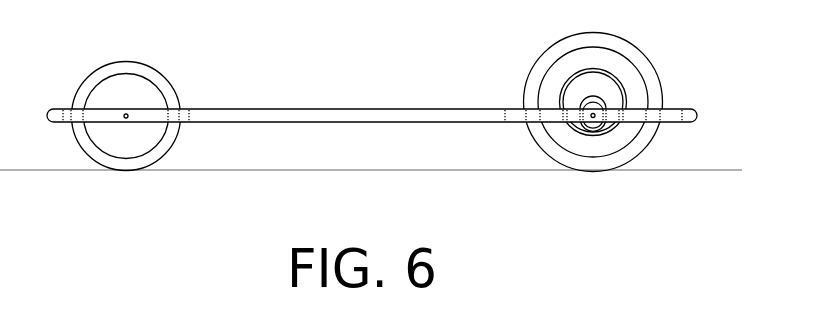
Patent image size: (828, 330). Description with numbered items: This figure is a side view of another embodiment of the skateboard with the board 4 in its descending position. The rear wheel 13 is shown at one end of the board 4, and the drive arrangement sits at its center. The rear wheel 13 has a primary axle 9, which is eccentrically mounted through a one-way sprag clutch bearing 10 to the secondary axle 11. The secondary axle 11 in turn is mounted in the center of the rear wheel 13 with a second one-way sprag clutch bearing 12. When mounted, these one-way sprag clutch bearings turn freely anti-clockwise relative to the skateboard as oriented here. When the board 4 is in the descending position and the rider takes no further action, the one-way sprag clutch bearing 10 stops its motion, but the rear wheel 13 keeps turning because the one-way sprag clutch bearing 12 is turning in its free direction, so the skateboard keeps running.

The board 4 is at (354, 114).
The primary axle 9 is at (591, 114).
The one-way sprag clutch bearing 10 is at (585, 105).
The secondary axle 11 is at (606, 92).
The one-way sprag clutch bearing 12 is at (623, 92).
The rear wheel 13 is at (653, 85).